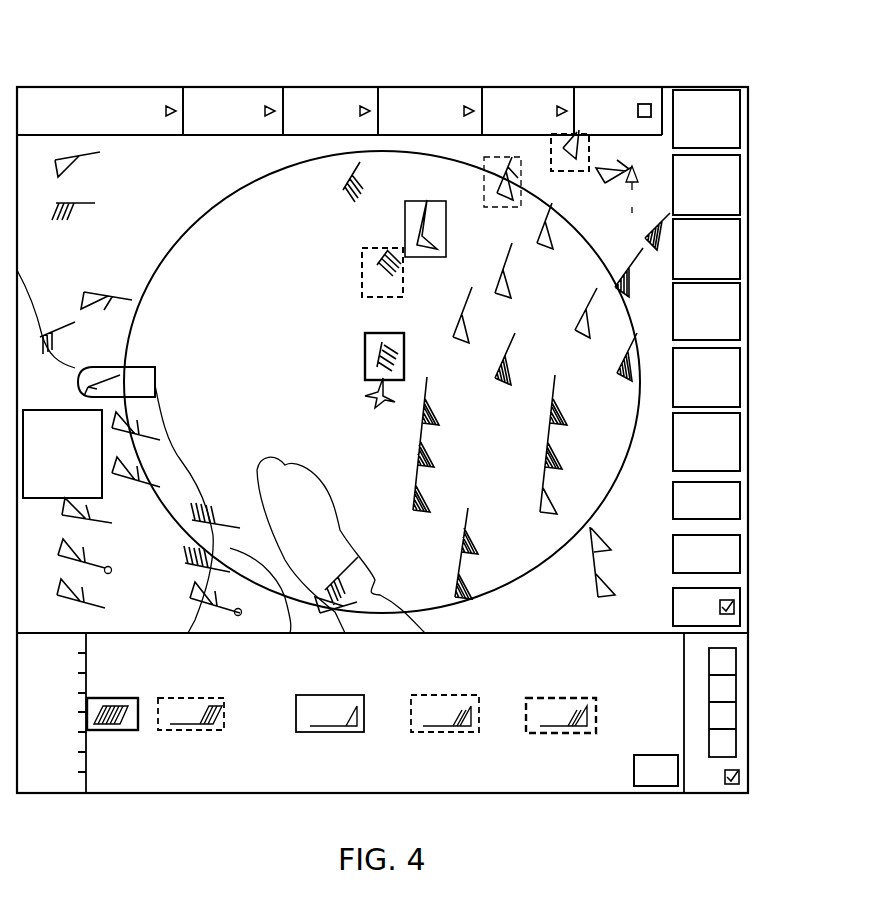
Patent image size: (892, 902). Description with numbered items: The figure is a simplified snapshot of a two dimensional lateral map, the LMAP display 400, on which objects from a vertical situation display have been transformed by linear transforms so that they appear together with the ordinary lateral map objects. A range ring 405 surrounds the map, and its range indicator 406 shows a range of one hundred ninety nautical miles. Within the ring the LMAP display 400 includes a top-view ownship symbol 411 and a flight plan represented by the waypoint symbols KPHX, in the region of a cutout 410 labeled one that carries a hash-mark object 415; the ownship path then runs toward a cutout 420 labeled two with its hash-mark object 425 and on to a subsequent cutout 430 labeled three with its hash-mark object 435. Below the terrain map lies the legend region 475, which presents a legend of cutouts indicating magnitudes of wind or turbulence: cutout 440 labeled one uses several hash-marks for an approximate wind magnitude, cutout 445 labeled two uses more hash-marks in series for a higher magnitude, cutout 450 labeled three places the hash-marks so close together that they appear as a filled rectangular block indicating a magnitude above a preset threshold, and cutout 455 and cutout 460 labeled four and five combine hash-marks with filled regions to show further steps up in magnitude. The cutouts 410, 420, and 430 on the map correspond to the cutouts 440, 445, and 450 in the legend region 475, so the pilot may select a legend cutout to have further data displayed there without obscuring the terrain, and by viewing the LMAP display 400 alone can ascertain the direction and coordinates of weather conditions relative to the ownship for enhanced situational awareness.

The LMAP display 400 is at (492, 87).
The range ring 405 is at (212, 207).
The range indicator 406 is at (155, 377).
The cutout 410 is at (365, 366).
The top-view ownship symbol 411 is at (372, 398).
The hash-mark object 415 is at (380, 352).
The cutout 420 is at (362, 278).
The hash-mark object 425 is at (381, 260).
The cutout 430 is at (405, 222).
The hash-mark object 435 is at (437, 252).
The cutout 440 is at (115, 698).
The cutout 445 is at (198, 698).
The cutout 450 is at (330, 695).
The cutout 455 is at (445, 695).
The cutout 460 is at (562, 698).
The legend region 475 is at (757, 633).